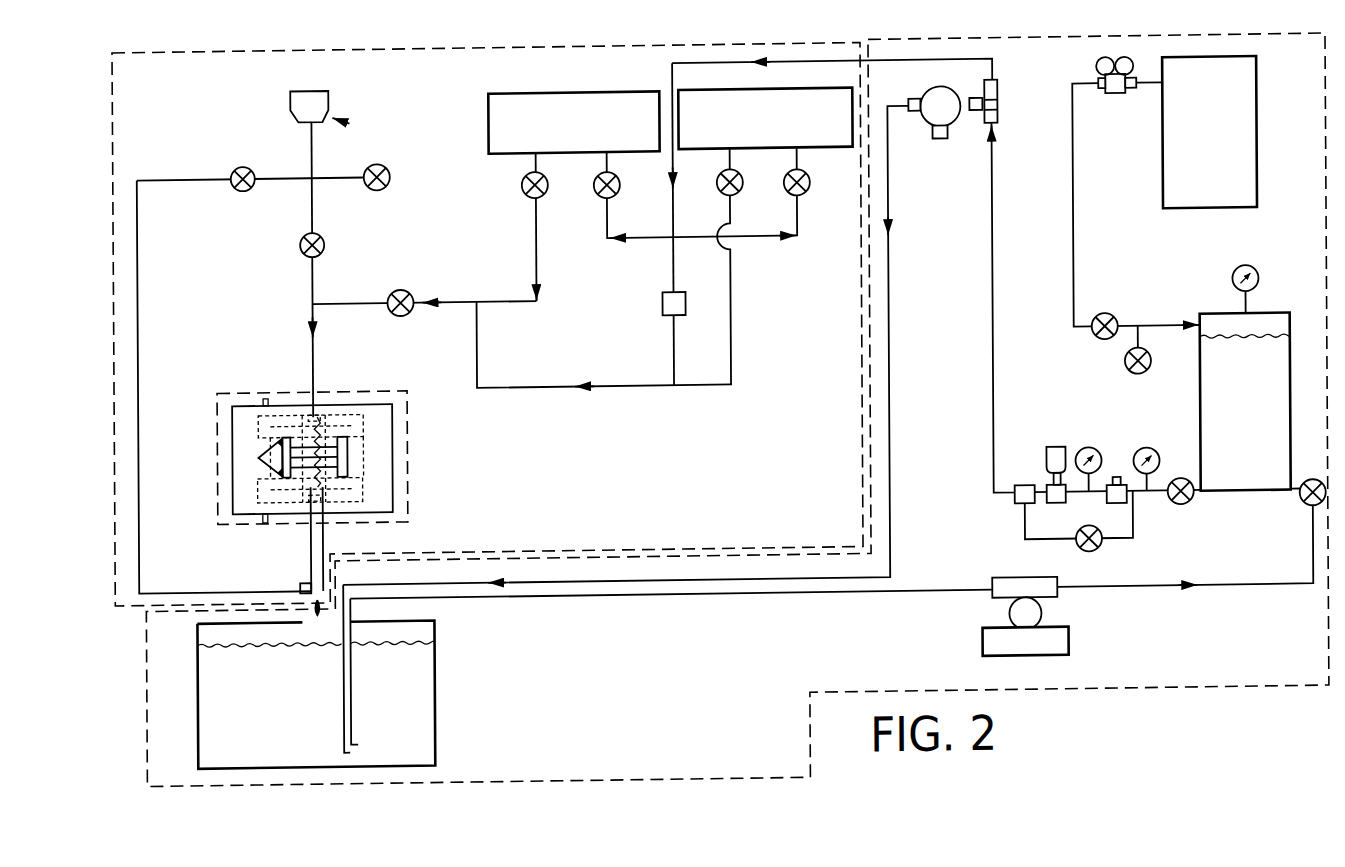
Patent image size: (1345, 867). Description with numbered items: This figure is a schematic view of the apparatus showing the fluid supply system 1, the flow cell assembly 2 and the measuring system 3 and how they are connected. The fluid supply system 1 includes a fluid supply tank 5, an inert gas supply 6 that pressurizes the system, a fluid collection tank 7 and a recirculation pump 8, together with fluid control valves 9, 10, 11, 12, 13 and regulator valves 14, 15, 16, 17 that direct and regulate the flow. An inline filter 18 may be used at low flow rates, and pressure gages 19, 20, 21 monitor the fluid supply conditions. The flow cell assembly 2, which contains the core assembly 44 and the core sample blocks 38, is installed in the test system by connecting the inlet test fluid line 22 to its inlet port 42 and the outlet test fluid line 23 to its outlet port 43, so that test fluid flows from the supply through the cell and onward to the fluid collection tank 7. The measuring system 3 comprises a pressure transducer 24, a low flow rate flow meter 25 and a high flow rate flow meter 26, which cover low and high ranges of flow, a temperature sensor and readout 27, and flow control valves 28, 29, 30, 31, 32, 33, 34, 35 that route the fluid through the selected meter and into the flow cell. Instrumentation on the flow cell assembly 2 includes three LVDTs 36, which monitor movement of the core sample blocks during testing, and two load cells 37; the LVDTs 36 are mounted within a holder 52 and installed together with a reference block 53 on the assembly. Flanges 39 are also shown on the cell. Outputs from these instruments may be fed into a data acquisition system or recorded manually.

The fluid supply system 1 is at (894, 50).
The flow cell assembly 2 is at (408, 498).
The measuring system 3 is at (289, 52).
The fluid supply tank 5 is at (1203, 324).
The inert gas supply 6 is at (1256, 168).
The fluid collection tank 7 is at (432, 730).
The recirculation pump 8 is at (1066, 666).
The fluid control valve 9 is at (1023, 497).
The fluid control valve 10 is at (1089, 566).
The fluid control valve 11 is at (1302, 523).
The fluid control valve 12 is at (1111, 327).
The fluid control valve 13 is at (1133, 388).
The regulator valve 14 is at (927, 99).
The regulator valve 15 is at (1115, 110).
The regulator valve 16 is at (1053, 460).
The regulator valve 17 is at (1187, 520).
The inline filter 18 is at (1118, 518).
The pressure gage 19 is at (1093, 462).
The pressure gage 20 is at (1152, 464).
The pressure gage 21 is at (1251, 284).
The inlet test fluid line 22 is at (311, 344).
The outlet test fluid line 23 is at (308, 542).
The pressure transducer 24 is at (291, 94).
The low flow rate flow meter 25 is at (588, 98).
The high flow rate flow meter 26 is at (795, 98).
The temperature sensor and readout 27 is at (661, 318).
The flow control valve 28 is at (233, 173).
The flow control valve 29 is at (304, 257).
The flow control valve 30 is at (388, 190).
The flow control valve 31 is at (410, 301).
The flow control valve 32 is at (521, 200).
The flow control valve 33 is at (617, 200).
The flow control valve 34 is at (719, 203).
The flow control valve 35 is at (808, 204).
The LVDT 36 is at (257, 460).
The load cell 37 is at (256, 424).
The core sample block 38 is at (319, 438).
The flange 39 is at (280, 444).
The inlet port 42 is at (309, 420).
The outlet port 43 is at (320, 505).
The core assembly 44 is at (367, 412).
The holder 52 is at (283, 440).
The reference block 53 is at (346, 462).